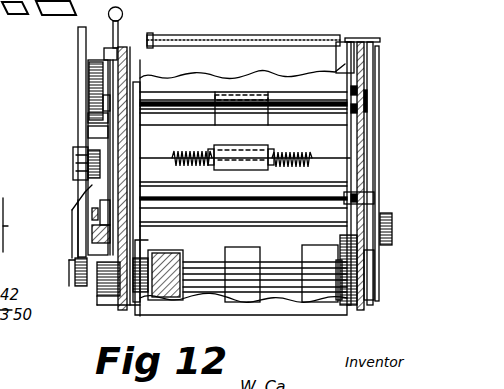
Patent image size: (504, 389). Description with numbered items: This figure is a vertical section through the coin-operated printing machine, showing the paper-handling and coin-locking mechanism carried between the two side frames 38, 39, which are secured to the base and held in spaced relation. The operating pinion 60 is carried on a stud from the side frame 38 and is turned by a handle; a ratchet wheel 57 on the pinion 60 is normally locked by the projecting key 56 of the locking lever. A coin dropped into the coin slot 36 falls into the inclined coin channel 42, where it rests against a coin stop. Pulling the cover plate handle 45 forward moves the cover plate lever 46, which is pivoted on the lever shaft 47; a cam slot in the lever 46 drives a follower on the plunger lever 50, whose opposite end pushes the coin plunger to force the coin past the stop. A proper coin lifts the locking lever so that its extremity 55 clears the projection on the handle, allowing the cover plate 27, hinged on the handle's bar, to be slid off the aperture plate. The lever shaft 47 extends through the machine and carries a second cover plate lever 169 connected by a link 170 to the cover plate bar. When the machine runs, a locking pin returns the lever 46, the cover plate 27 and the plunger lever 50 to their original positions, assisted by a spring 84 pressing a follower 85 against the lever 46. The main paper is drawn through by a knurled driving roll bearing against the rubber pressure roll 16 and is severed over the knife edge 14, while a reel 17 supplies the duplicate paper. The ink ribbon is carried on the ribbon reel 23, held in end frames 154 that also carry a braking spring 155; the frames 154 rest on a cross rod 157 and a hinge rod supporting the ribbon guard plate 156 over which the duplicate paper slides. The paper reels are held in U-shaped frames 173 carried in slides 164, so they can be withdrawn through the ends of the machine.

The knife edge 14 is at (248, 313).
The rubber pressure roll 16 is at (240, 250).
The reel 17 is at (268, 207).
The ribbon reel 23 is at (372, 74).
The cover plate 27 is at (322, 35).
The coin slot 36 is at (78, 44).
The side frame 38 is at (120, 297).
The side frame 39 is at (370, 161).
The coin channel 42 is at (82, 287).
The cover plate handle 45 is at (123, 15).
The cover plate lever 46 is at (108, 88).
The lever shaft 47 is at (392, 230).
The plunger lever 50 is at (78, 233).
The extremity 55 is at (92, 118).
The projecting key 56 is at (103, 104).
The ratchet wheel 57 is at (86, 134).
The operating pinion 60 is at (73, 173).
The spring 84 is at (3, 203).
The follower 85 is at (17, 227).
The end frames 154 is at (368, 109).
The braking spring 155 is at (252, 147).
The ribbon guard plate 156 is at (340, 45).
The cross rod 157 is at (367, 92).
The slides 164 is at (370, 196).
The second cover plate lever 169 is at (372, 126).
The link 170 is at (365, 53).
The U-shaped frames 173 is at (368, 181).